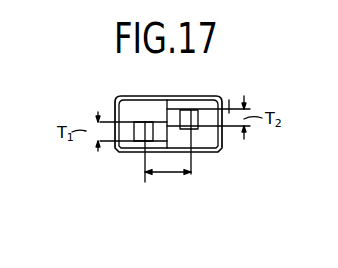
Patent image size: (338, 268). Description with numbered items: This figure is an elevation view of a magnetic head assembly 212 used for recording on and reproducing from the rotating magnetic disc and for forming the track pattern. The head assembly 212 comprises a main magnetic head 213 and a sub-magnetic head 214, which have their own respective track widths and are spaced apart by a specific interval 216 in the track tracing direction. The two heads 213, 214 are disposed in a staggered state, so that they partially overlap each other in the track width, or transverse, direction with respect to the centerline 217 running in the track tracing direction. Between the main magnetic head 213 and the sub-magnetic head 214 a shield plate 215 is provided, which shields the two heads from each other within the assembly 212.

The magnetic head assembly 212 is at (117, 96).
The main magnetic head 213 is at (139, 142).
The sub-magnetic head 214 is at (192, 130).
The shield plate 215 is at (172, 112).
The specific interval 216 is at (172, 174).
The centerline 217 is at (229, 113).